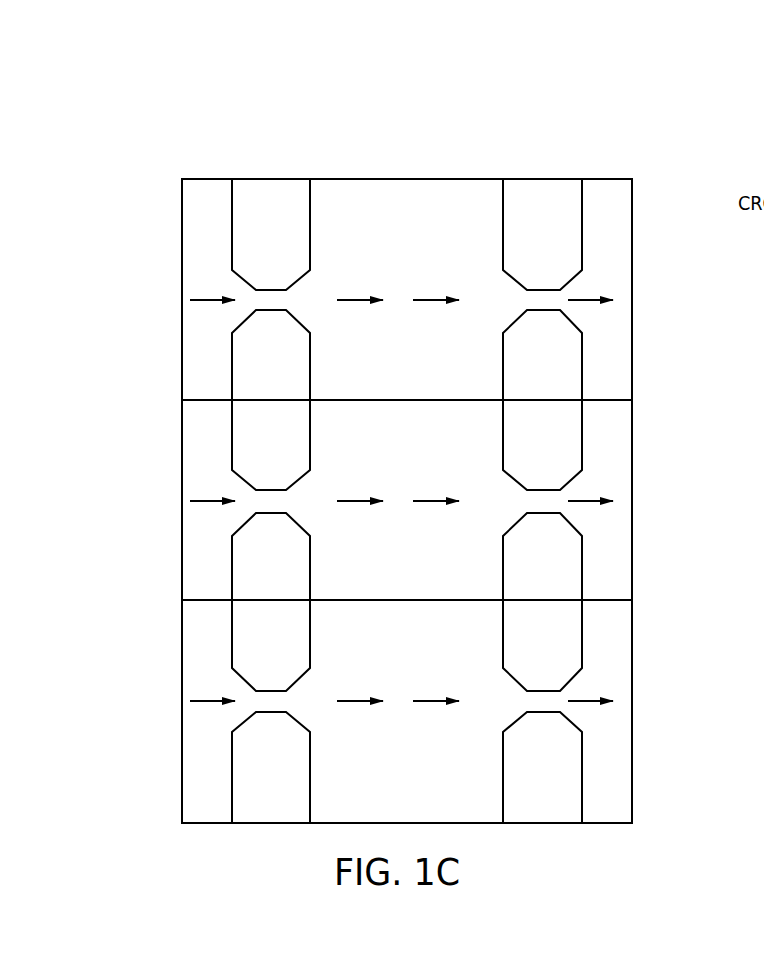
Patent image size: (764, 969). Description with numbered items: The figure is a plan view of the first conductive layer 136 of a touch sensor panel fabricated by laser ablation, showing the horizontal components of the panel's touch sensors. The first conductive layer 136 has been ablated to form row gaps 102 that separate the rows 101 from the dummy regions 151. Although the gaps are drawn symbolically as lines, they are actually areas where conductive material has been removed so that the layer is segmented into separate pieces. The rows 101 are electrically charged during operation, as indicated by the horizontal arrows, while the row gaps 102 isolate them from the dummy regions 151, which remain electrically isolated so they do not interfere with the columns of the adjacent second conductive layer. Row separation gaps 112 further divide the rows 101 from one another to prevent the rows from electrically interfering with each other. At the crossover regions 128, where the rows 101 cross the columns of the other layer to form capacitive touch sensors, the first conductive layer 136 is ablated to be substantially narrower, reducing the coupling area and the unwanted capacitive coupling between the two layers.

The first conductive layer 136 is at (152, 149).
The rows 101 is at (197, 244).
The dummy regions 151 is at (272, 198).
The row gaps 102 is at (310, 197).
The row separation gaps 112 is at (196, 402).
The crossover regions 128 is at (586, 287).